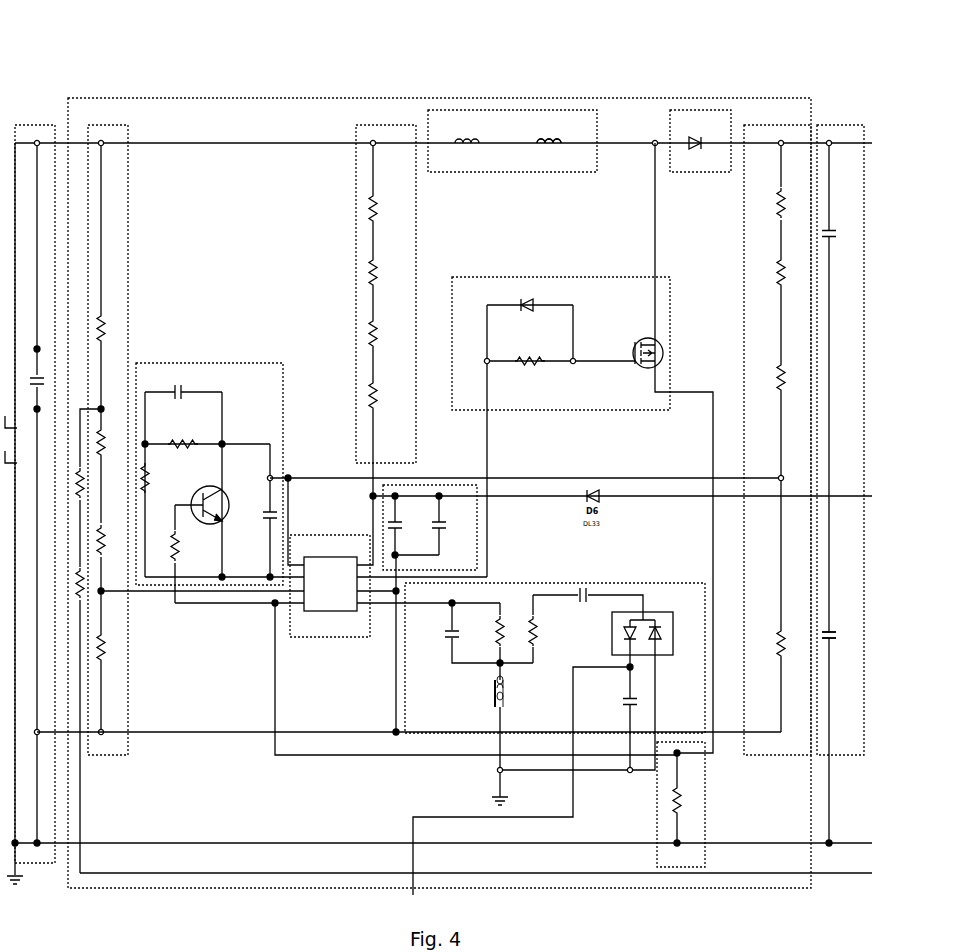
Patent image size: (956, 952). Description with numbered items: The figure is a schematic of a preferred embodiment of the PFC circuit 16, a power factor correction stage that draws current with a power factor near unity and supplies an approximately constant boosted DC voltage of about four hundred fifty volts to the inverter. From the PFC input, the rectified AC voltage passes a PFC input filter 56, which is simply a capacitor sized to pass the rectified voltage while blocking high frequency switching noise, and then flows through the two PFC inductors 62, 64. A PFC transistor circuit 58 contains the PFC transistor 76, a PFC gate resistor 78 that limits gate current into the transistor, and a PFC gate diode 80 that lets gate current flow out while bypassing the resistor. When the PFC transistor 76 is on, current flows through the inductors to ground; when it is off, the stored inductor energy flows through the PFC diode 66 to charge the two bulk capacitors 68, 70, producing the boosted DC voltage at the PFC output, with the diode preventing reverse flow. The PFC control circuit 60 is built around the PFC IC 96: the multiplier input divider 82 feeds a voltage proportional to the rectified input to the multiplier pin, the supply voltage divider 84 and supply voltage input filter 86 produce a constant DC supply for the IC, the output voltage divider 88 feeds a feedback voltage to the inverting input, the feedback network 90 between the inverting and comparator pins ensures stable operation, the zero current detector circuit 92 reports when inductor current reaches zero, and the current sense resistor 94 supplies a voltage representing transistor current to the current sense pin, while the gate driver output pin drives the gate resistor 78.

The PFC circuit 16 is at (439, 470).
The PFC input filter 56 is at (33, 125).
The PFC transistor circuit 58 is at (555, 390).
The PFC control circuit 60 is at (655, 98).
The PFC inductor 62 is at (568, 110).
The PFC inductor 64 is at (549, 141).
The PFC diode 66 is at (717, 110).
The bulk capacitor 68 is at (825, 125).
The bulk capacitor 70 is at (829, 635).
The PFC transistor 76 is at (633, 333).
The PFC gate resistor 78 is at (553, 368).
The PFC gate diode 80 is at (507, 291).
The multiplier input resistive voltage divider 82 is at (97, 125).
The supply voltage resistive voltage divider 84 is at (356, 190).
The supply voltage input filter 86 is at (430, 485).
The output voltage resistive voltage divider 88 is at (757, 125).
The voltage feedback compensation network 90 is at (200, 363).
The zero current detector circuit 92 is at (640, 583).
The current sense resistor 94 is at (707, 830).
The PFC integrated circuit 96 is at (335, 637).